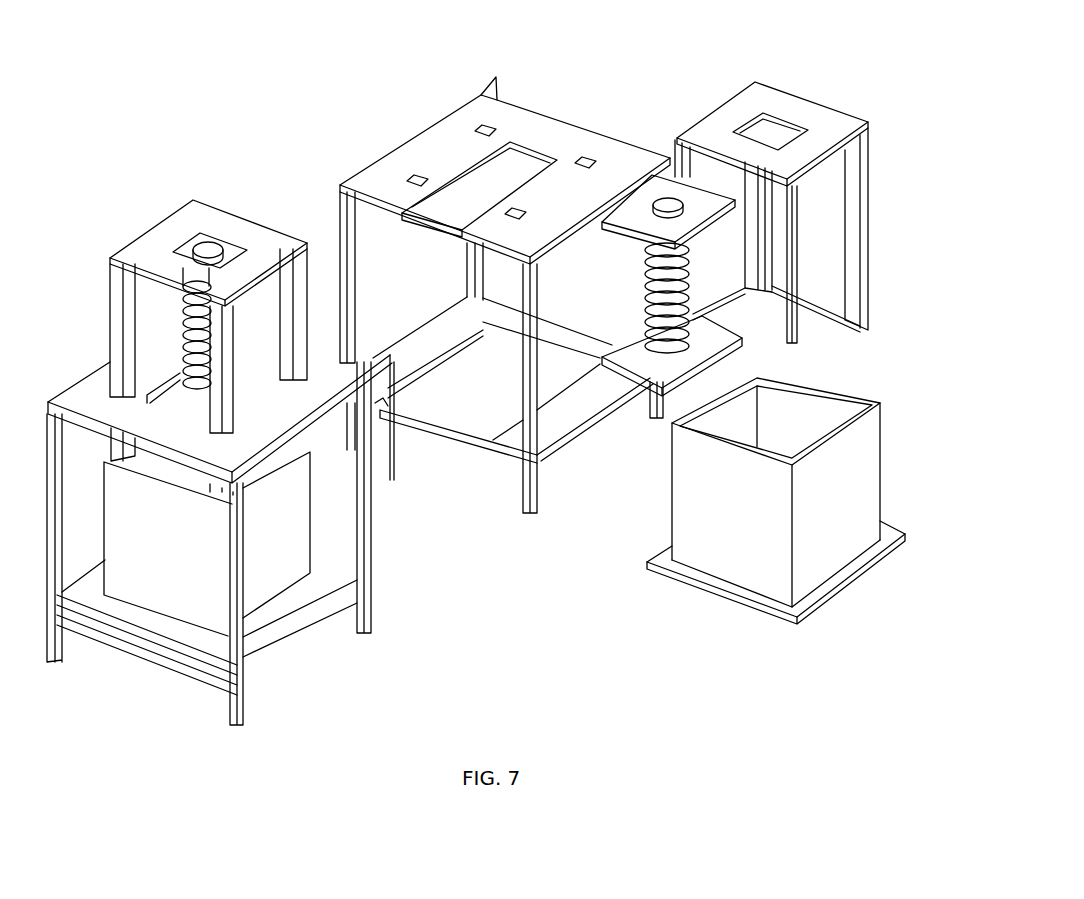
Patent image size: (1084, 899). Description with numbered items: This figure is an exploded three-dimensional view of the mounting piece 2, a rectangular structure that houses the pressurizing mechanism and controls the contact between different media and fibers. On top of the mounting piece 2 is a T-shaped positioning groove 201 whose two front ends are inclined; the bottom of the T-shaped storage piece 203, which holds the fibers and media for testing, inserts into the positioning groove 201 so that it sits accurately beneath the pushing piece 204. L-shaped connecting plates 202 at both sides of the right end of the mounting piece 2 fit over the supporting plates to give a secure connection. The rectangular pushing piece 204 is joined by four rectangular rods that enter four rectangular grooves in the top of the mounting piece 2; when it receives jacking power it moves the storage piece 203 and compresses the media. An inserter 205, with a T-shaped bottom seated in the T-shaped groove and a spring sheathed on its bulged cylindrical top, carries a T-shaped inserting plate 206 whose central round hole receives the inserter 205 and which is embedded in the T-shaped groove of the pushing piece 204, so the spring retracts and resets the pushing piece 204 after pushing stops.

The mounting piece 2 is at (560, 435).
The positioning groove 201 is at (465, 378).
The L-shaped connecting plates 202 is at (382, 396).
The storage piece 203 is at (767, 548).
The pushing piece 204 is at (826, 122).
The inserter 205 is at (657, 354).
The inserting plate 206 is at (663, 183).